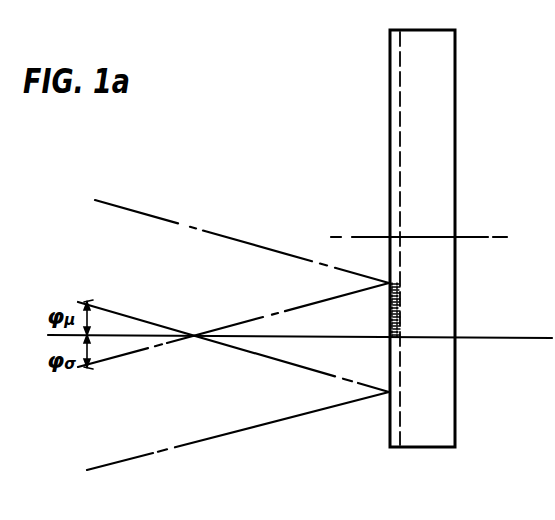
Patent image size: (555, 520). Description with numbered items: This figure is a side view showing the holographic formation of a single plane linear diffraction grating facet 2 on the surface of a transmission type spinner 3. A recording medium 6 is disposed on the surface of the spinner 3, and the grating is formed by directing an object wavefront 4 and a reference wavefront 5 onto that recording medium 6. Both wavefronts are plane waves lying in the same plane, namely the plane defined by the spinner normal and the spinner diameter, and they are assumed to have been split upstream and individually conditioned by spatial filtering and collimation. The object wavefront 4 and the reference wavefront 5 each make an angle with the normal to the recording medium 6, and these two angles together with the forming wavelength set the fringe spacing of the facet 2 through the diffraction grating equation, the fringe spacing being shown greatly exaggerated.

The plane linear diffraction grating facet 2 is at (399, 313).
The transmission type spinner 3 is at (440, 87).
The object wavefront 4 is at (167, 235).
The reference wavefront 5 is at (196, 412).
The recording medium 6 is at (390, 84).